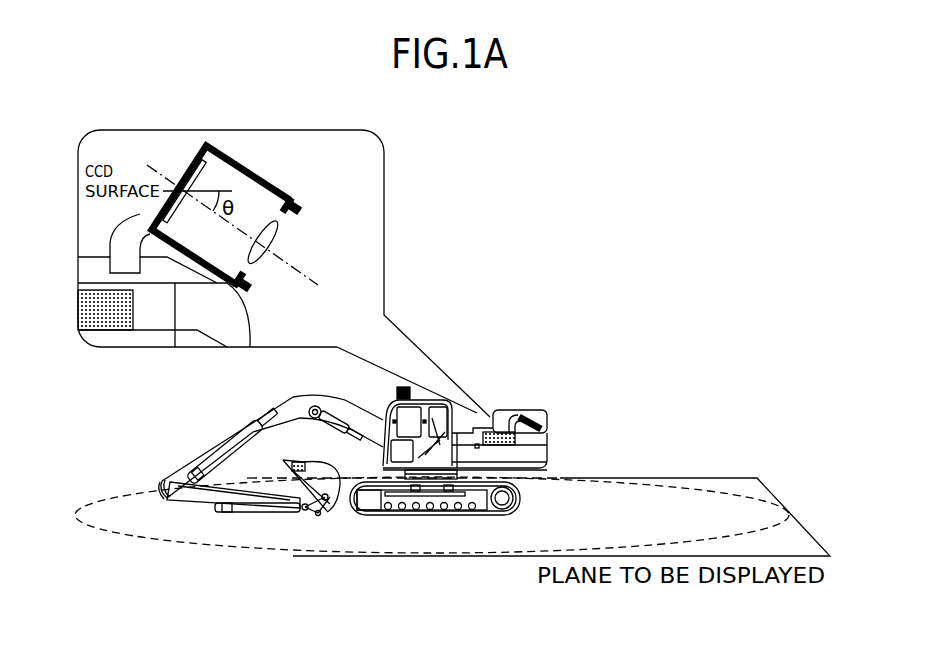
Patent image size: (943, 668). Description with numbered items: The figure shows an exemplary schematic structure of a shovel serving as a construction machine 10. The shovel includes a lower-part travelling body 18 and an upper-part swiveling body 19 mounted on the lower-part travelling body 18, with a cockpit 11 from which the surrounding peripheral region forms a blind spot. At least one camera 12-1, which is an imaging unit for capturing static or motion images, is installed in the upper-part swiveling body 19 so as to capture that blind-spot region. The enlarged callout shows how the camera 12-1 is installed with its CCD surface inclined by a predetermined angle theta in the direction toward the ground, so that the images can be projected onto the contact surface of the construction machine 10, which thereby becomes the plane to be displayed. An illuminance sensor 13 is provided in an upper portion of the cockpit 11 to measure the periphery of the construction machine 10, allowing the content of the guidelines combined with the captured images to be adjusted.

The construction machine 10 is at (282, 383).
The cockpit 11 is at (440, 452).
The camera 12-1 is at (253, 171).
The illuminance sensor 13 is at (397, 389).
The lower-part travelling body 18 is at (370, 503).
The upper-part swiveling body 19 is at (463, 458).